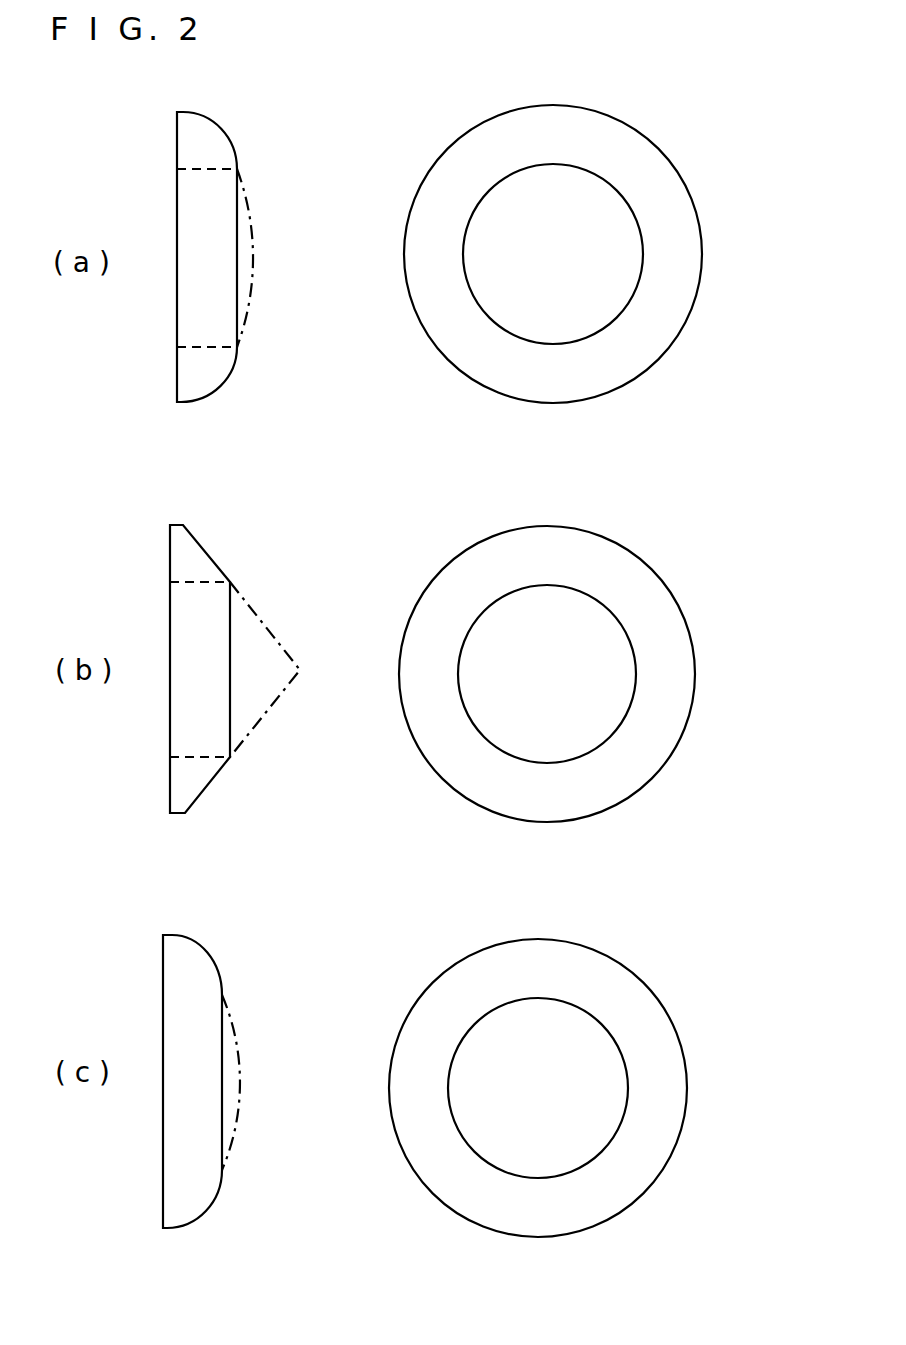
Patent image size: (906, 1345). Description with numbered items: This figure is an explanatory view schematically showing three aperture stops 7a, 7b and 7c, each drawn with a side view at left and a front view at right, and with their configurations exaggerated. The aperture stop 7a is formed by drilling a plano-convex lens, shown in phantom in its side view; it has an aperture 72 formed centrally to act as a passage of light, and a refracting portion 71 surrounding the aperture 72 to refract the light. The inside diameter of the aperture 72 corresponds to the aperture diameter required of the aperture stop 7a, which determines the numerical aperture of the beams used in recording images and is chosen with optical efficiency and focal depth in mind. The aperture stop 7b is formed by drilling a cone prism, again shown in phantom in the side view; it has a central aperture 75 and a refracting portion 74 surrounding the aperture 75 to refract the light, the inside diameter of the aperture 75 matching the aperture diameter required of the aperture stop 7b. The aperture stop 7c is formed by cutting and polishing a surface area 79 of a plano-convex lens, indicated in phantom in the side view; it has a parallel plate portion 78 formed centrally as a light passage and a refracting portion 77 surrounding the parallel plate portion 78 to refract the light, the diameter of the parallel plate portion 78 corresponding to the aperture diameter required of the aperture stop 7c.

The aperture stop 7a is at (245, 110).
The refracting portion 71 is at (213, 153).
The aperture 72 is at (215, 318).
The aperture stop 7b is at (250, 535).
The refracting portion 74 is at (188, 557).
The aperture 75 is at (208, 727).
The aperture stop 7c is at (242, 940).
The refracting portion 77 is at (185, 968).
The parallel plate portion 78 is at (220, 1110).
The surface area 79 is at (228, 1052).